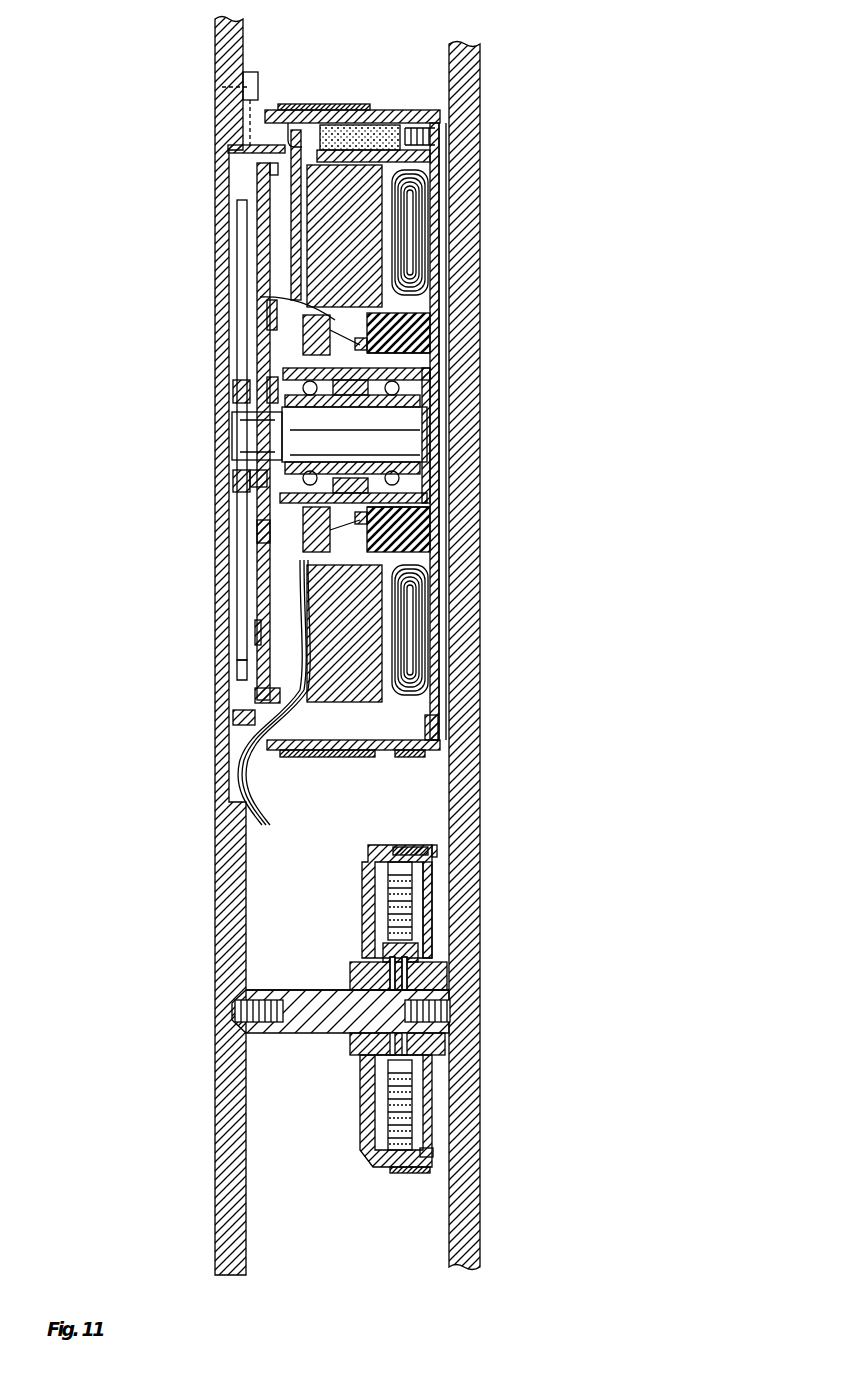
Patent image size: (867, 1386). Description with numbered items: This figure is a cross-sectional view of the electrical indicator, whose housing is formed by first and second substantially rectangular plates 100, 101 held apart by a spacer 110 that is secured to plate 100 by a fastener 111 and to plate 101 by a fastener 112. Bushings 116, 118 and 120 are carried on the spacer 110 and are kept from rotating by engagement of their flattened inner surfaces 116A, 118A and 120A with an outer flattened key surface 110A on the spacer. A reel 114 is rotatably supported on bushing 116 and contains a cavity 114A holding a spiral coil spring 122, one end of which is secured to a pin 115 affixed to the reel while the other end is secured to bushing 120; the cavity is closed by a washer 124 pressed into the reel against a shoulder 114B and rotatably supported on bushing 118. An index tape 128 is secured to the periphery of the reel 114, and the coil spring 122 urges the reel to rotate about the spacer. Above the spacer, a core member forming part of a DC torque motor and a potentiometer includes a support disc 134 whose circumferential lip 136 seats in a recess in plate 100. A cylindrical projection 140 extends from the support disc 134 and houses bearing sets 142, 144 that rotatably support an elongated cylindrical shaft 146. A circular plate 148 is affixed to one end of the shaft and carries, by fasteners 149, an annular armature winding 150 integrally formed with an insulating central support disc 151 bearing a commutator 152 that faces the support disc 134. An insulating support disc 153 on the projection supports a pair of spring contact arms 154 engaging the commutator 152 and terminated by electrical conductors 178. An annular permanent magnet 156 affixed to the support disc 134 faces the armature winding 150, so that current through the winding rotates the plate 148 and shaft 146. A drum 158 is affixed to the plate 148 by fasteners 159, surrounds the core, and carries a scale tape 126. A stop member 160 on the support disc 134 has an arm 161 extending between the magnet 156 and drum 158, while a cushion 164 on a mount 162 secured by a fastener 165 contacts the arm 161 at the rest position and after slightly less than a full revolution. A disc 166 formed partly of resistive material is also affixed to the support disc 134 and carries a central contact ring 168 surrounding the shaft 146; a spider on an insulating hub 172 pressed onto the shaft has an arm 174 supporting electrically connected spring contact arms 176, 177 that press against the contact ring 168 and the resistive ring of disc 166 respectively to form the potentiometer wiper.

The first plate 100 is at (240, 1198).
The second plate 101 is at (475, 1245).
The second spacer 110 is at (270, 1033).
The outer flattened key surface 110A is at (268, 990).
The fastener 111 is at (225, 1008).
The fastener 112 is at (455, 1012).
The reel 114 is at (368, 1133).
The cavity 114A is at (418, 882).
The shoulder 114B is at (432, 1152).
The pin 115 is at (373, 870).
The bushing 116 is at (380, 960).
The flattened inner surface 116A is at (360, 990).
The bushing 118 is at (440, 1042).
The flattened inner surface 118A is at (440, 992).
The bushing 120 is at (425, 940).
The flattened inner surface 120A is at (365, 993).
The spiral coil spring 122 is at (405, 895).
The washer 124 is at (432, 1120).
The scale tape 126 is at (335, 108).
The index tape 128 is at (402, 847).
The support disc 134 is at (284, 208).
The circumferential lip 136 is at (243, 150).
The cylindrical projection 140 is at (433, 372).
The bearing set 142 is at (300, 432).
The bearing set 144 is at (415, 410).
The elongated cylindrical shaft 146 is at (425, 448).
The circular plate 148 is at (382, 575).
The fasteners 149 is at (410, 240).
The annular armature winding 150 is at (435, 305).
The central support disc 151 is at (430, 352).
The commutator 152 is at (400, 333).
The support disc 153 is at (320, 375).
The spring contact arms 154 is at (297, 318).
The annular permanent magnet 156 is at (262, 262).
The drum 158 is at (445, 112).
The fasteners 159 is at (433, 727).
The stop member 160 is at (270, 178).
The arm 161 is at (287, 110).
The mount 162 is at (437, 134).
The cushion 164 is at (372, 162).
The fastener 165 is at (445, 150).
The disc 166 is at (265, 288).
The contact ring 168 is at (302, 340).
The hub 172 is at (260, 468).
The arm 174 is at (247, 515).
The spring contact arm 176 is at (260, 540).
The spring contact arm 177 is at (250, 655).
The electrical conductors 178 is at (288, 695).